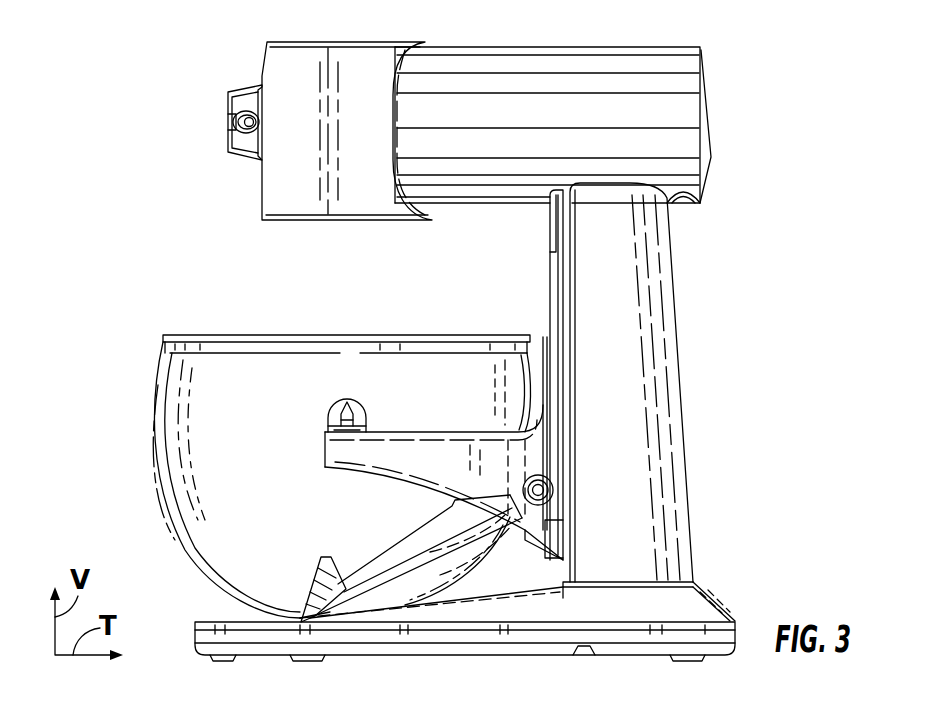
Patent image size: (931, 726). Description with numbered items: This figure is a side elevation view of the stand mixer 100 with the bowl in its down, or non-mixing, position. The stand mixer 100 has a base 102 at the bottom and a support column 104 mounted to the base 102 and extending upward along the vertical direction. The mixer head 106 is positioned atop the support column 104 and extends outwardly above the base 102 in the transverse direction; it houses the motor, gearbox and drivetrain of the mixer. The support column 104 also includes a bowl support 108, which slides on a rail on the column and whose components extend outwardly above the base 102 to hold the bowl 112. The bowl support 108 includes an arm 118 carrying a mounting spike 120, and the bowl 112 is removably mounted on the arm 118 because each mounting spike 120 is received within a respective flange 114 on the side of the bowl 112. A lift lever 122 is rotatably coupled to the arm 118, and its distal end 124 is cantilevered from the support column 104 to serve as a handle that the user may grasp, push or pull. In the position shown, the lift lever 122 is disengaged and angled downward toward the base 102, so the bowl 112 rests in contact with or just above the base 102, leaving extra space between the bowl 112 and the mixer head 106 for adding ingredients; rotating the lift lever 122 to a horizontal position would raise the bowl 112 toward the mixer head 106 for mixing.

The stand mixer 100 is at (139, 111).
The base 102 is at (643, 632).
The support column 104 is at (617, 373).
The mixer head 106 is at (680, 110).
The bowl support 108 is at (602, 297).
The bowl 112 is at (220, 363).
The flange 114 is at (337, 422).
The arm 118 is at (436, 455).
The mounting spike 120 is at (348, 411).
The lift lever 122 is at (420, 534).
The distal end 124 is at (323, 578).